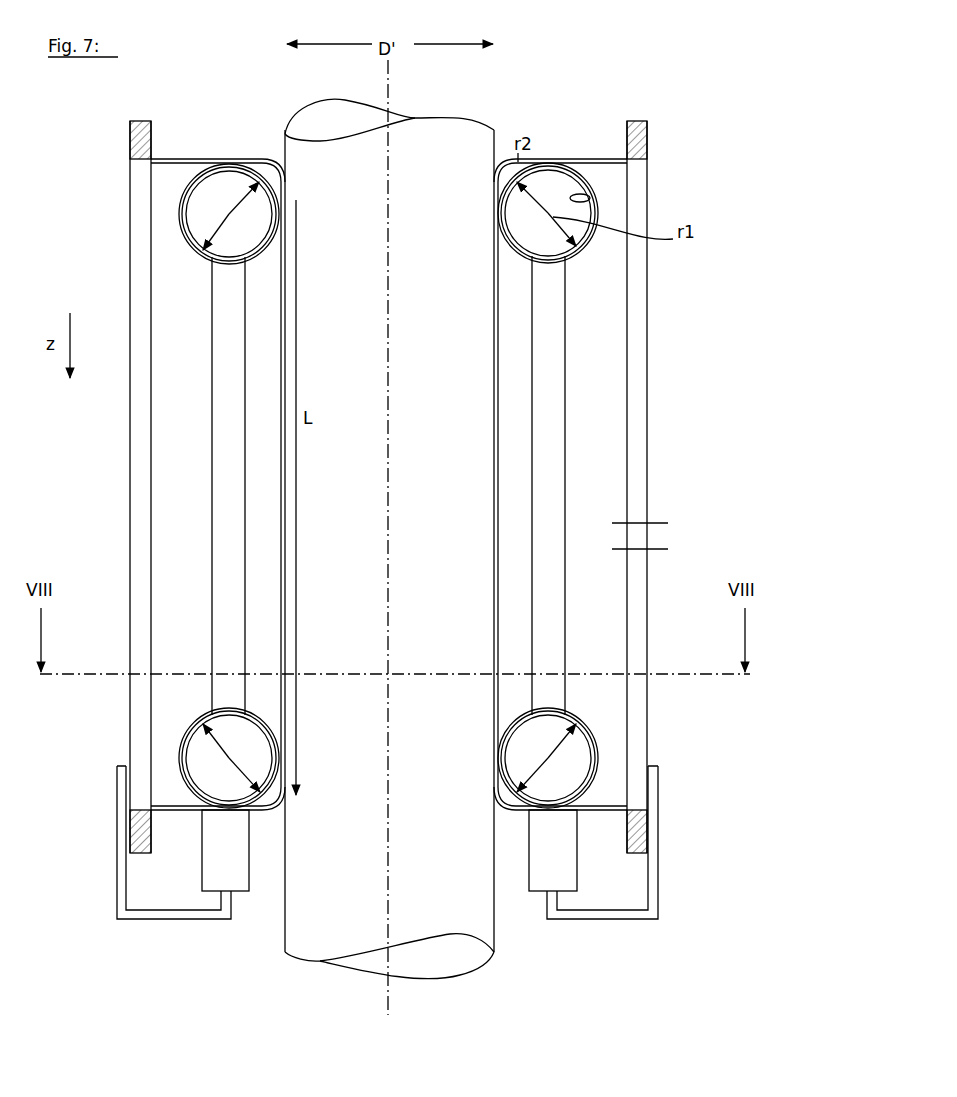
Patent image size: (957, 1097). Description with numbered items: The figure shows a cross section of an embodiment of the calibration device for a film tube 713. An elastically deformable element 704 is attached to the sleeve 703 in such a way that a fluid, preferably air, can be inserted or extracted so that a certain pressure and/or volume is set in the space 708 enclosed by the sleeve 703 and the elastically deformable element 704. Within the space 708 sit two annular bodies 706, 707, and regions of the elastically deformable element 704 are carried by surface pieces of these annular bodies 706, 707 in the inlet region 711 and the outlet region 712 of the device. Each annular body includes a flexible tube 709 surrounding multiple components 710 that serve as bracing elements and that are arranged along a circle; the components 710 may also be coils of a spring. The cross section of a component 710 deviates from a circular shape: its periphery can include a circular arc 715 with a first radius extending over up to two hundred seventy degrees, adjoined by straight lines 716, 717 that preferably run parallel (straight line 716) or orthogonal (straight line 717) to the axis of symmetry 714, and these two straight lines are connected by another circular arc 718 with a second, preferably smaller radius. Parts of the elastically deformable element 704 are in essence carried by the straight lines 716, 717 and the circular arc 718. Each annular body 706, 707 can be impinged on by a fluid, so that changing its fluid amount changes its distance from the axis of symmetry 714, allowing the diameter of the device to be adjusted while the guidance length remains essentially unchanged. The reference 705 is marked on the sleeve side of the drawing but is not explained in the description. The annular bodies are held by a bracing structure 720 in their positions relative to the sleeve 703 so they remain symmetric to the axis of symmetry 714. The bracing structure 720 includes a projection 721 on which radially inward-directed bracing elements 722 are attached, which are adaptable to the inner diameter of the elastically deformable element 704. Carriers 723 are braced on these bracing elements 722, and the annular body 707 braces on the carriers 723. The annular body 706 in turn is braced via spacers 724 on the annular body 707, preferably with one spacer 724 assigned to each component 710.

The sleeve 703 is at (633, 380).
The elastically deformable element 704 is at (498, 436).
The drive 705 is at (645, 538).
The annular body 706 is at (594, 176).
The annular body 707 is at (604, 722).
The space 708 is at (614, 365).
The flexible tube 709 is at (551, 92).
The components 710 is at (541, 166).
The inlet region 711 is at (504, 134).
The outlet region 712 is at (509, 816).
The film tube 713 is at (287, 140).
The axis of symmetry 714 is at (388, 538).
The circular arc 715 is at (590, 197).
The straight line 716 is at (508, 230).
The straight line 717 is at (527, 170).
The circular arc 718 is at (496, 189).
The bracing structure 720 is at (679, 798).
The projection 721 is at (661, 872).
The bracing elements 722 is at (630, 915).
The carriers 723 is at (558, 848).
The spacers 724 is at (215, 494).